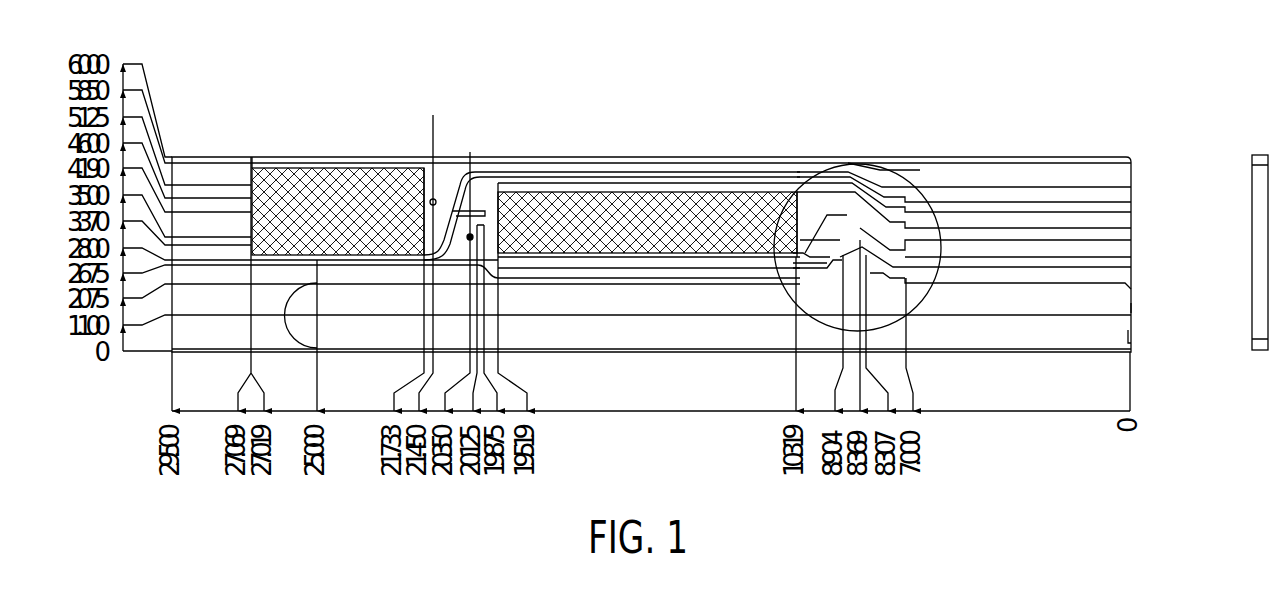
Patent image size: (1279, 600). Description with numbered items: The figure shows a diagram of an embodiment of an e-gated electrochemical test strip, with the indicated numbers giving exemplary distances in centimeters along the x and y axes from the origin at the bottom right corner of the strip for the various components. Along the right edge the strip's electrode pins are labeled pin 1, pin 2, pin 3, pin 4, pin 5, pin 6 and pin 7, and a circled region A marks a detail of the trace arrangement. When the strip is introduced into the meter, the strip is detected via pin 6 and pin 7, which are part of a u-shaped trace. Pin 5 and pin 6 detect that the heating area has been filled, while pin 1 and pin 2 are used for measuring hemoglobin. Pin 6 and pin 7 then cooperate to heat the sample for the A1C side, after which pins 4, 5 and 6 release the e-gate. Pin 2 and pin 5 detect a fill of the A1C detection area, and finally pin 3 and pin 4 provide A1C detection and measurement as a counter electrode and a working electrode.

The pin 1 is at (1122, 168).
The pin 2 is at (1122, 193).
The pin 3 is at (1122, 221).
The pin 4 is at (1122, 250).
The pin 5 is at (1122, 278).
The pin 6 is at (1122, 308).
The pin 7 is at (1122, 338).
The detail region A is at (857, 224).